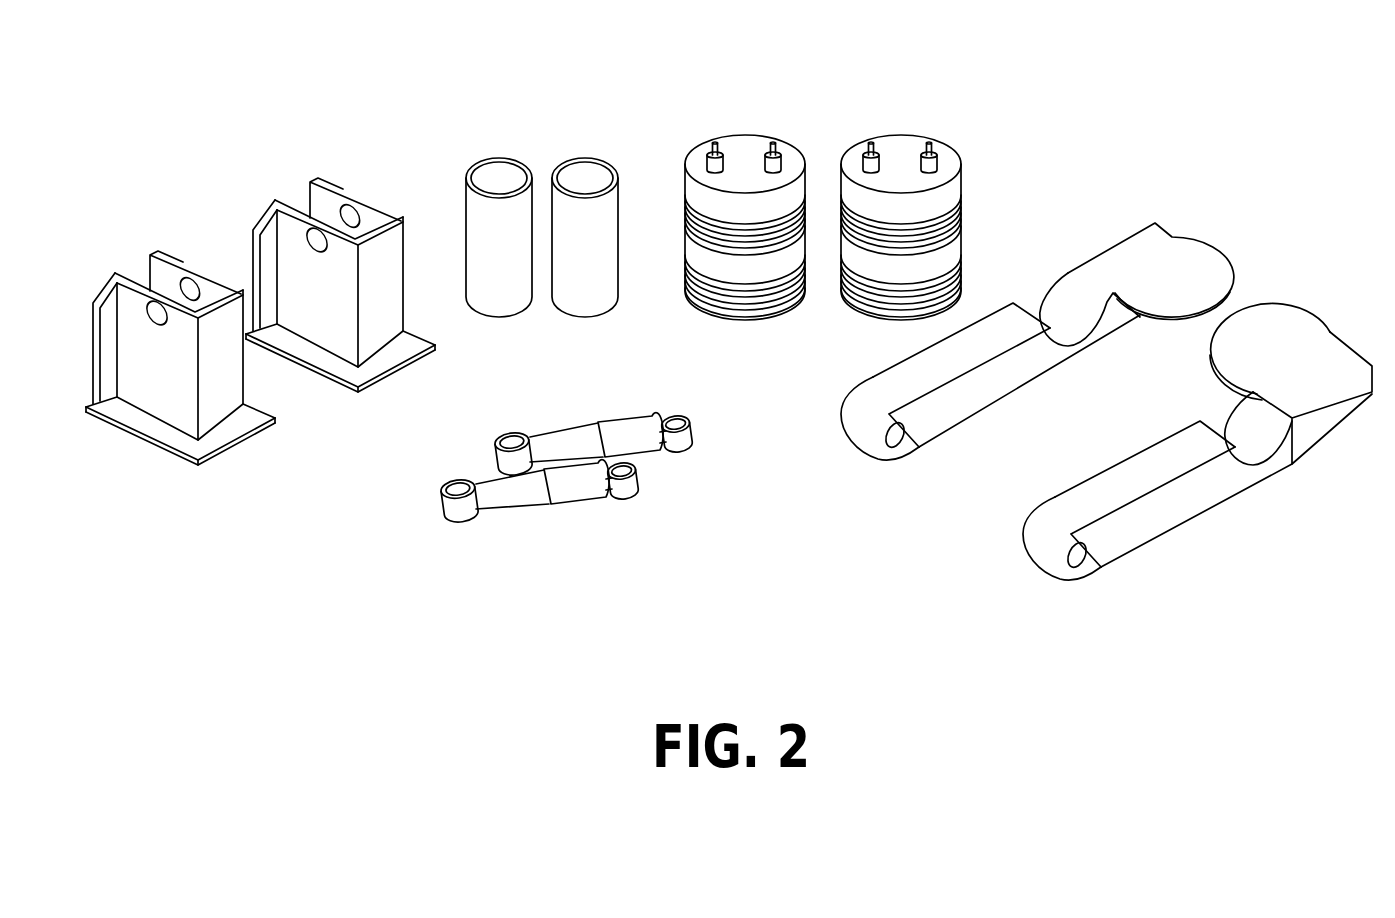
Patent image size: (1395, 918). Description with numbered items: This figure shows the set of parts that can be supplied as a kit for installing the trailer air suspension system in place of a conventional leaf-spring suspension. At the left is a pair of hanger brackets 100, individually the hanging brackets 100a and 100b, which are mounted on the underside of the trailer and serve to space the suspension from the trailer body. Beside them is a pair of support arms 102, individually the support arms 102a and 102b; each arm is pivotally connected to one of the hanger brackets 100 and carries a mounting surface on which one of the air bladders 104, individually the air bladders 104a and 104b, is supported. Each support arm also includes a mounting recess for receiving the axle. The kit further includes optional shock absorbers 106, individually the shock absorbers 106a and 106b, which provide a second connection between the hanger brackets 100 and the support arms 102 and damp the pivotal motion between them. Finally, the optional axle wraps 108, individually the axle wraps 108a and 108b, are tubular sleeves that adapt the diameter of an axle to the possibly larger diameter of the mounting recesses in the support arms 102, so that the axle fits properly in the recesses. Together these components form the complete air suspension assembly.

The hanger brackets 100 is at (327, 160).
The hanging bracket 100a is at (225, 451).
The hanging bracket 100b is at (388, 377).
The support arms 102 is at (1378, 296).
The support arm 102a is at (1216, 244).
The support arm 102b is at (1300, 306).
The air bladders 104 is at (955, 90).
The air bladder 104a is at (743, 133).
The air bladder 104b is at (898, 133).
The shock absorbers 106 is at (682, 365).
The shock absorber 106a is at (565, 428).
The shock absorber 106b is at (517, 510).
The axle wraps 108 is at (628, 130).
The axle wrap 108a is at (507, 140).
The axle wrap 108b is at (583, 158).